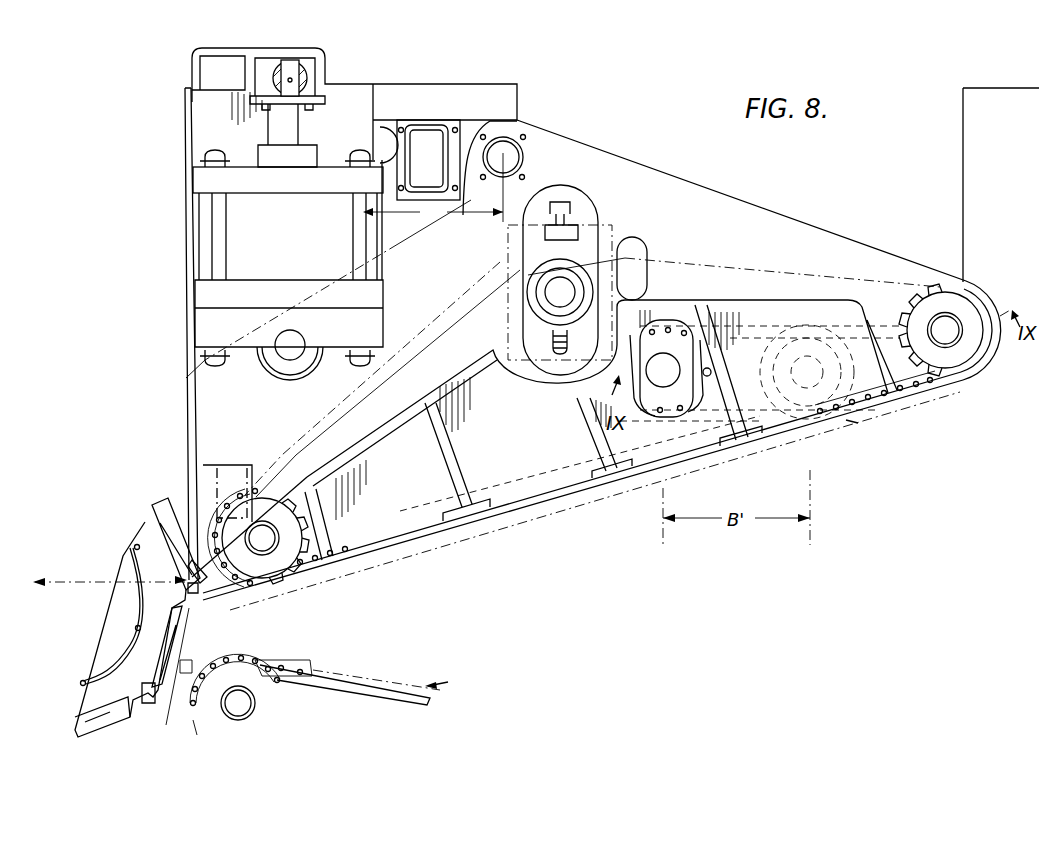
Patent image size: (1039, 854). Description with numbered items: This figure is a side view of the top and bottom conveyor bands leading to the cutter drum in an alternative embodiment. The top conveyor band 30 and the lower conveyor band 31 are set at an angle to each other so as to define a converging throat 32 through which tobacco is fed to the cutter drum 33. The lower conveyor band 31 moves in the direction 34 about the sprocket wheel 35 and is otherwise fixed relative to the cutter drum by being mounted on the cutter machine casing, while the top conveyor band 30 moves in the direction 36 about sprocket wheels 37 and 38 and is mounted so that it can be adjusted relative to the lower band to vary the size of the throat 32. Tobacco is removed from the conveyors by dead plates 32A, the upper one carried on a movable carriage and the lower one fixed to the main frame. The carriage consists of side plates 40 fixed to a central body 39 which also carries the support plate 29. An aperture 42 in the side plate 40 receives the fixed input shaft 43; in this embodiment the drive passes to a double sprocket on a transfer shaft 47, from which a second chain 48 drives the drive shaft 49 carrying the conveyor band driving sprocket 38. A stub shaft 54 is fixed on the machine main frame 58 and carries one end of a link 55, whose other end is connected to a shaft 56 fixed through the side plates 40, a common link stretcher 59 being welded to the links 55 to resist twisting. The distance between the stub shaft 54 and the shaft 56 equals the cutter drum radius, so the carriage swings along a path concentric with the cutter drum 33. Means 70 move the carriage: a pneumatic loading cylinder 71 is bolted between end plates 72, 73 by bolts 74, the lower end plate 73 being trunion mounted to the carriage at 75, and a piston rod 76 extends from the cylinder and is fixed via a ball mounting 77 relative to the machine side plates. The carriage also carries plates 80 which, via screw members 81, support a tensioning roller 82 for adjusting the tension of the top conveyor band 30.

The support plate 29 is at (421, 541).
The top conveyor band 30 is at (580, 504).
The lower conveyor band 31 is at (343, 672).
The converging throat 32 is at (285, 634).
The dead plate 32A is at (213, 592).
The cutter drum 33 is at (158, 522).
The direction of movement of lower conveyor band 34 is at (439, 674).
The sprocket wheel 35 is at (282, 665).
The direction of movement of top conveyor band 36 is at (752, 458).
The sprocket wheel 37 is at (284, 556).
The conveyor band driving sprocket 38 is at (967, 345).
The central body 39 is at (455, 462).
The side plate 40 is at (786, 220).
The aperture 42 is at (683, 393).
The input shaft 43 is at (672, 378).
The transfer shaft 47 is at (858, 424).
The second chain 48 is at (890, 398).
The drive shaft 49 is at (945, 338).
The stub shaft 54 is at (368, 165).
The link 55 is at (512, 150).
The shaft 56 is at (480, 120).
The machine main frame 58 is at (330, 92).
The link stretcher 59 is at (417, 135).
The means for moving the carriage 70 is at (184, 246).
The pneumatic loading cylinder 71 is at (235, 227).
The end plate 72 is at (206, 178).
The lower end plate 73 is at (210, 290).
The bolt 74 is at (205, 157).
The trunion mounting 75 is at (298, 345).
The piston rod 76 is at (292, 130).
The ball mounting 77 is at (262, 72).
The plate 80 is at (593, 233).
The screw member 81 is at (553, 340).
The tensioning roller 82 is at (540, 286).